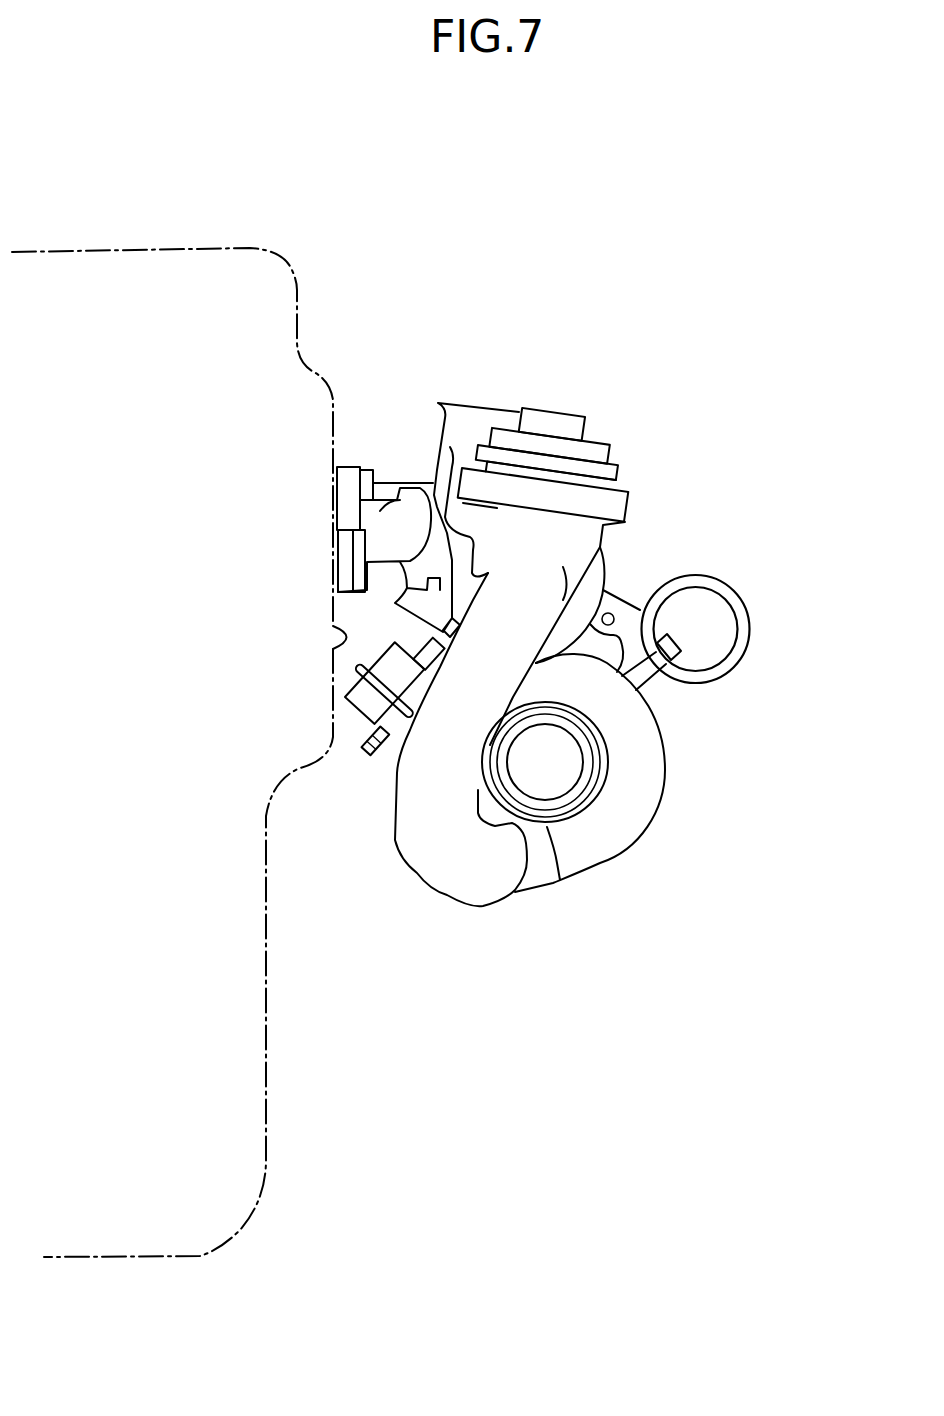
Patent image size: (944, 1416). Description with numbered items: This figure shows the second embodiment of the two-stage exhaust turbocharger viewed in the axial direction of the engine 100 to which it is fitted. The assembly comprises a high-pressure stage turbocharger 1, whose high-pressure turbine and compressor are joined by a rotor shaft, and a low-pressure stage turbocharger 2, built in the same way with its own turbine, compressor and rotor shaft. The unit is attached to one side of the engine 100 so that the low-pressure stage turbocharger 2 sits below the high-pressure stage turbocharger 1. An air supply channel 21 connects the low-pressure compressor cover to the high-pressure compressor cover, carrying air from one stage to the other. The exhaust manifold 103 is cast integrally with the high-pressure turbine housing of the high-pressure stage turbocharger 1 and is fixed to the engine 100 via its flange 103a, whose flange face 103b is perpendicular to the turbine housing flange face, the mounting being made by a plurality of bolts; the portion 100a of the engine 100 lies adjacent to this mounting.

The high-pressure stage turbocharger 1 is at (628, 540).
The low-pressure stage turbocharger 2 is at (690, 773).
The air supply channel 21 is at (415, 813).
The engine 100 is at (300, 298).
The opening 100a is at (331, 640).
The exhaust manifold 103 is at (388, 482).
The flange 103a is at (340, 480).
The flange face 103b is at (337, 513).